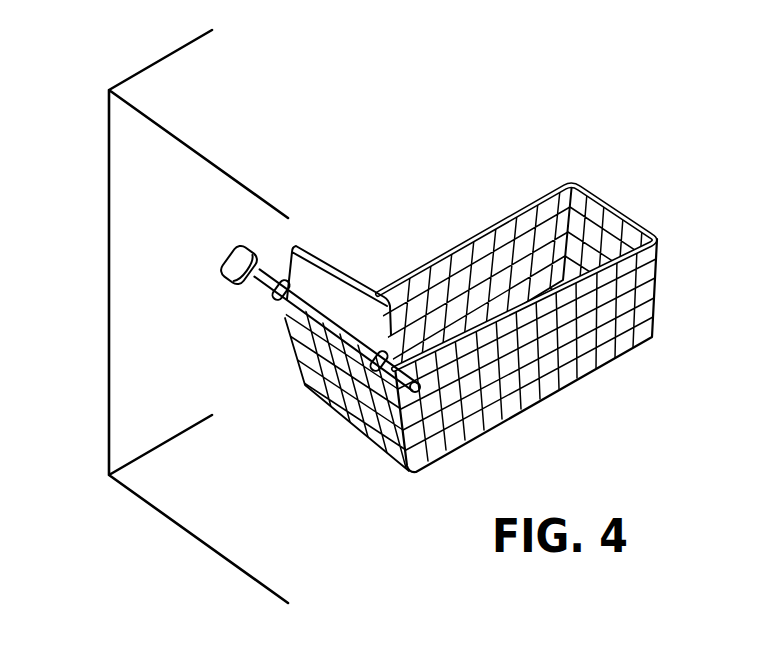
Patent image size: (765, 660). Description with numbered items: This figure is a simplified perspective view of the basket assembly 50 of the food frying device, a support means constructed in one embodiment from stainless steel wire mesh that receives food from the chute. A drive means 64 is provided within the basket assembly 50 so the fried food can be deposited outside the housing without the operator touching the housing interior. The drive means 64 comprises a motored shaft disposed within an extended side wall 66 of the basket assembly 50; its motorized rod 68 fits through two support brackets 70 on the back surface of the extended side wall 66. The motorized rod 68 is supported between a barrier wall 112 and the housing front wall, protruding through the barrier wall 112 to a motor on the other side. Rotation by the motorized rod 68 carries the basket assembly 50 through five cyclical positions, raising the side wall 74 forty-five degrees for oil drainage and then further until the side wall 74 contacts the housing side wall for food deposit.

The basket assembly 50 is at (488, 311).
The drive means 64 is at (213, 268).
The extended side wall 66 is at (344, 307).
The motorized rod 68 is at (265, 298).
The support brackets 70 is at (281, 316).
The side wall 74 is at (623, 228).
The barrier wall 112 is at (125, 361).